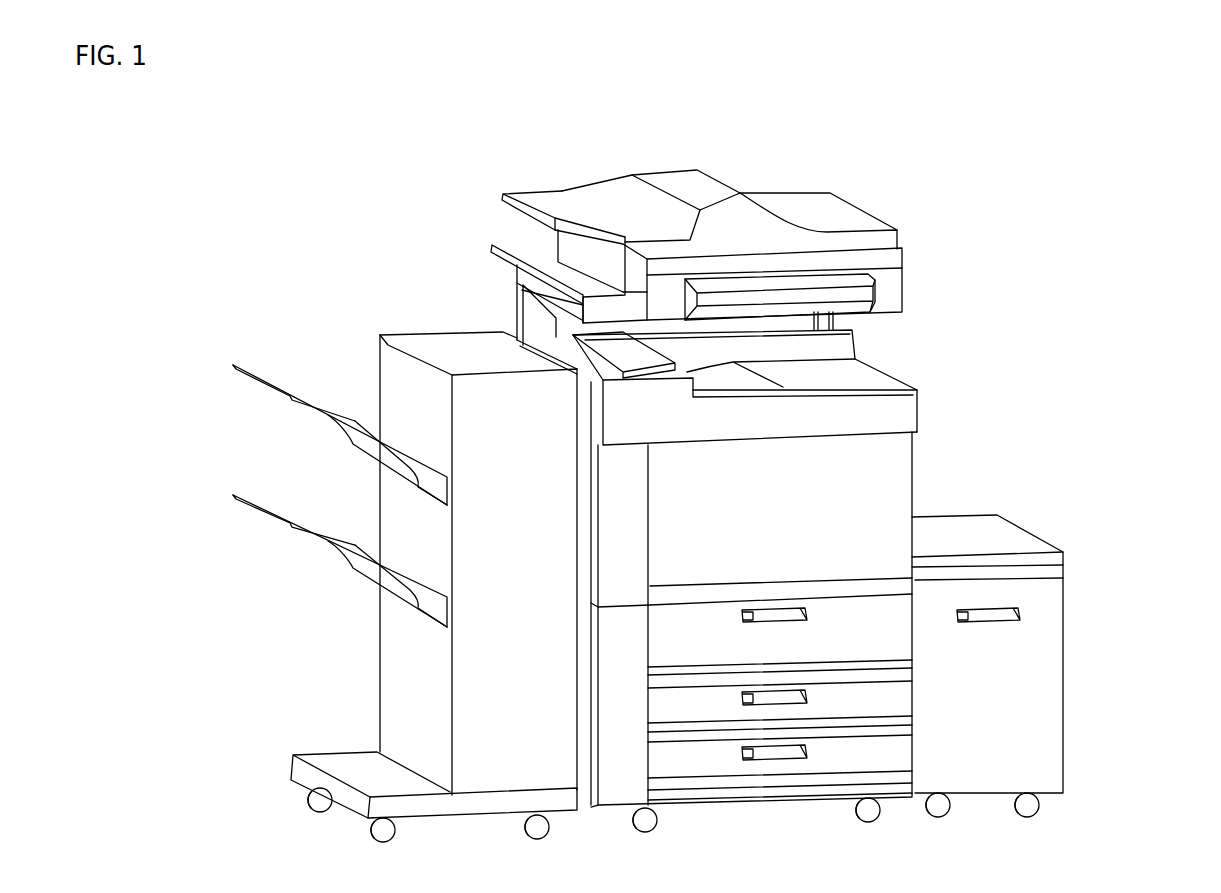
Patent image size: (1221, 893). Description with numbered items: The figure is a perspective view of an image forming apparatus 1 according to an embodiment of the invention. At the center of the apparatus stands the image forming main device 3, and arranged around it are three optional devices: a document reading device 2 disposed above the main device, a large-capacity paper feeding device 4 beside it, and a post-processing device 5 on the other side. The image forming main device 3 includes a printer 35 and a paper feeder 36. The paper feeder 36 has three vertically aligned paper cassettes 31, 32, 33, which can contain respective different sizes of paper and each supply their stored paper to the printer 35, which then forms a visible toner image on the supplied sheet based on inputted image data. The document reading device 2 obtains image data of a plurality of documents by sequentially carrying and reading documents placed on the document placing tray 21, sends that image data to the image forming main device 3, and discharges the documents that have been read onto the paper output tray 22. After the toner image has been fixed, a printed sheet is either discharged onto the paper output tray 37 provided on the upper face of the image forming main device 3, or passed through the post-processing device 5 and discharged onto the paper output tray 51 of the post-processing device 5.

The image forming apparatus 1 is at (930, 183).
The document reading device 2 is at (783, 180).
The image forming main device 3 is at (917, 467).
The large-capacity paper feeding device 4 is at (1022, 525).
The post-processing device 5 is at (445, 317).
The document placing tray 21 is at (540, 197).
The paper output tray 22 is at (503, 247).
The paper cassette 31 is at (897, 654).
The paper cassette 32 is at (897, 698).
The paper cassette 33 is at (897, 757).
The printer 35 is at (908, 493).
The paper feeder 36 is at (1128, 638).
The paper output tray 37 is at (863, 374).
The paper output tray 51 is at (267, 375).